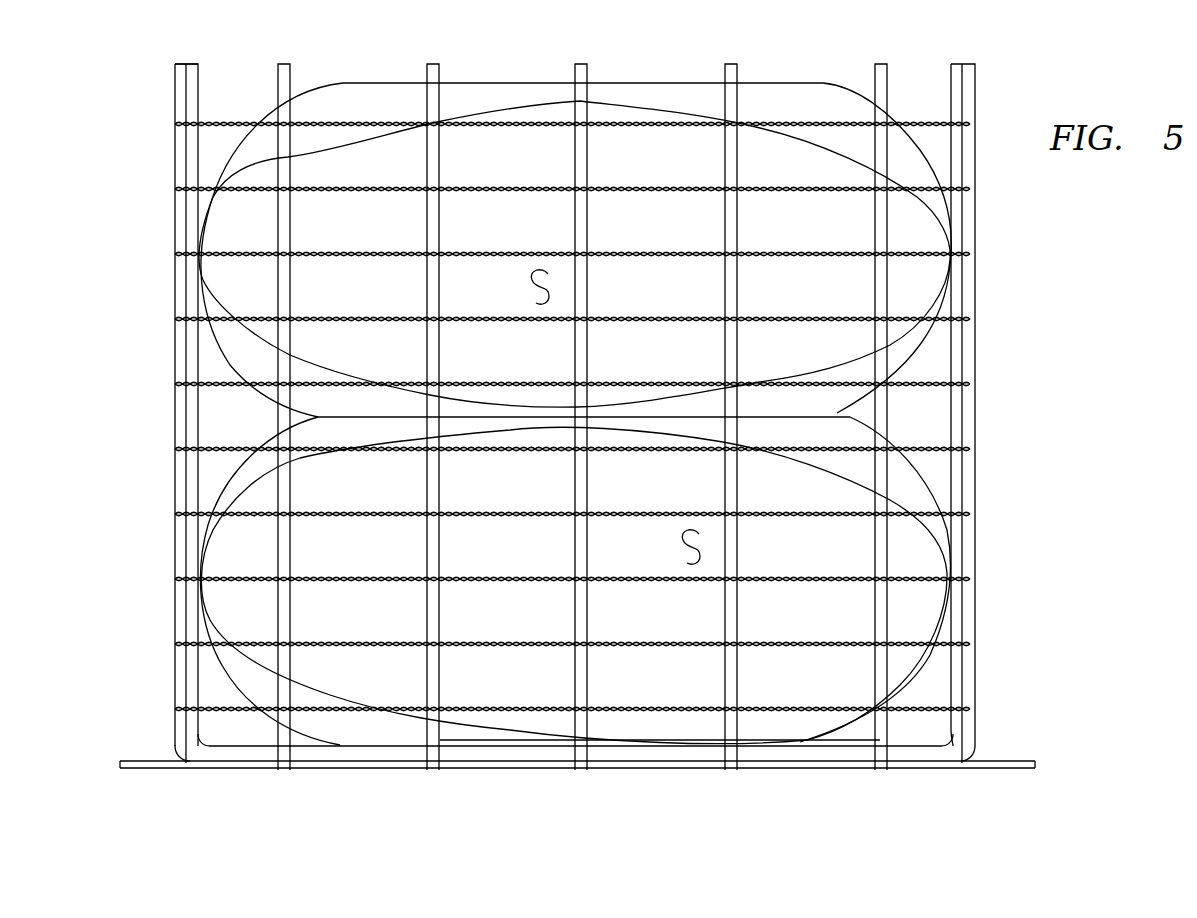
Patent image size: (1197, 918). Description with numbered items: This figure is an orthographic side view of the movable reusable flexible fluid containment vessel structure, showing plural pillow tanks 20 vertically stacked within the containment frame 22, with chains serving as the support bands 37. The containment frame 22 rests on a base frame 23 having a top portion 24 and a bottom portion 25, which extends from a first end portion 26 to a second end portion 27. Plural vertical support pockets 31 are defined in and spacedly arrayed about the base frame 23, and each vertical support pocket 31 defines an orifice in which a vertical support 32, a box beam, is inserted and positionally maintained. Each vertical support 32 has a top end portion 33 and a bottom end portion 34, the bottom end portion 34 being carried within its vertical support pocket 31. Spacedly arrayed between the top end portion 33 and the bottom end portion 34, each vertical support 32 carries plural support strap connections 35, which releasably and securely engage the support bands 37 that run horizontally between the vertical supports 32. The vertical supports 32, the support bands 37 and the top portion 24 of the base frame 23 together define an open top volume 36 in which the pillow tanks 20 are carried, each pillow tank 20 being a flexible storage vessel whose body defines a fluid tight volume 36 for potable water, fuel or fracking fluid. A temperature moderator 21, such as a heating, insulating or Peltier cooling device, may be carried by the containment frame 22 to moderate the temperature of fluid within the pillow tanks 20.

The pillow tank 20 is at (343, 80).
The temperature moderator 21 is at (963, 427).
The containment frame 22 is at (697, 54).
The base frame 23 is at (222, 768).
The top portion 24 is at (675, 748).
The bottom portion 25 is at (353, 770).
The first end portion 26 is at (130, 768).
The second end portion 27 is at (1035, 766).
The vertical support pocket 31 is at (290, 762).
The vertical support 32 is at (433, 65).
The top end portion 33 is at (583, 97).
The bottom end portion 34 is at (440, 735).
The support strap connection 35 is at (730, 130).
The fluid tight volume 36 is at (528, 292).
The support band 37 is at (340, 252).